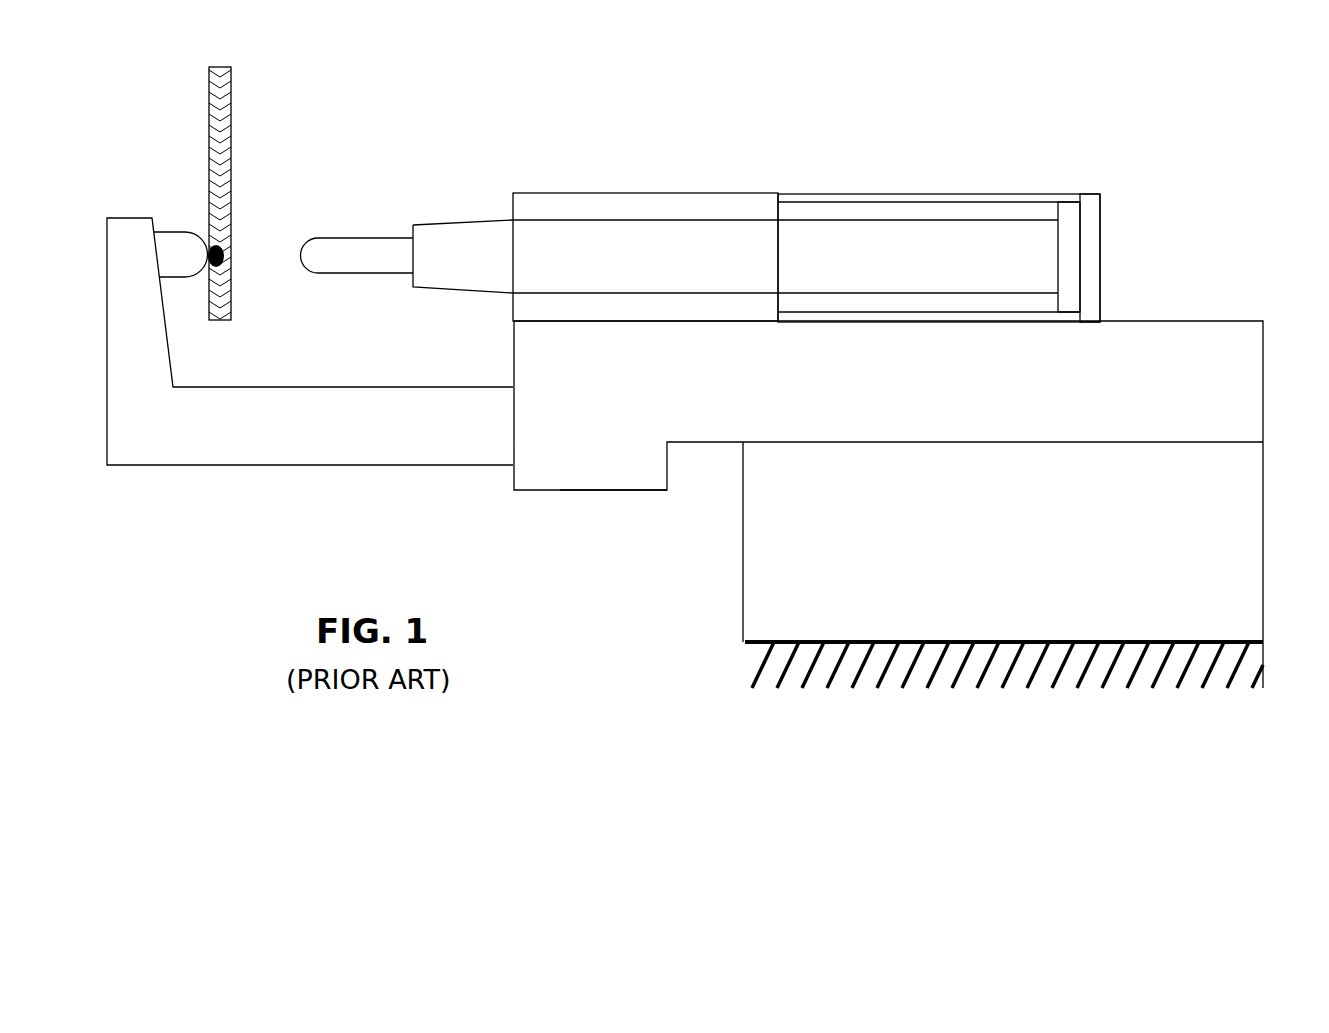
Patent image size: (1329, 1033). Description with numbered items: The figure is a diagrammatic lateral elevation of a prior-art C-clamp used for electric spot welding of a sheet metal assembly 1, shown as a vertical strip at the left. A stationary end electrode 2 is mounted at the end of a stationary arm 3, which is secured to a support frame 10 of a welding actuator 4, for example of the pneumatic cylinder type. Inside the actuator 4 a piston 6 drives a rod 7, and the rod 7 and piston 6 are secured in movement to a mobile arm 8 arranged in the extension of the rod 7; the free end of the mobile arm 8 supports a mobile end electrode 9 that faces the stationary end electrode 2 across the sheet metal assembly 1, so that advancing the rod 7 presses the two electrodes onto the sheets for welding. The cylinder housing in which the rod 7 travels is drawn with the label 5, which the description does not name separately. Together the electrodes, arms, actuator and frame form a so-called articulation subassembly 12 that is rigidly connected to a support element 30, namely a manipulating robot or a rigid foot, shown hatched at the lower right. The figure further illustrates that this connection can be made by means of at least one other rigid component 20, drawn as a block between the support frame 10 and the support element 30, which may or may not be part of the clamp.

The sheet metal assembly 1 is at (213, 129).
The stationary end electrode 2 is at (181, 242).
The stationary arm 3 is at (163, 442).
The welding actuator 4 is at (849, 193).
The cylinder housing 5 is at (648, 212).
The piston 6 is at (1079, 198).
The rod 7 is at (591, 262).
The mobile arm 8 is at (480, 245).
The mobile end electrode 9 is at (342, 243).
The support frame 10 is at (560, 442).
The articulation subassembly 12 is at (604, 498).
The rigid component 20 is at (773, 543).
The support element 30 is at (765, 657).